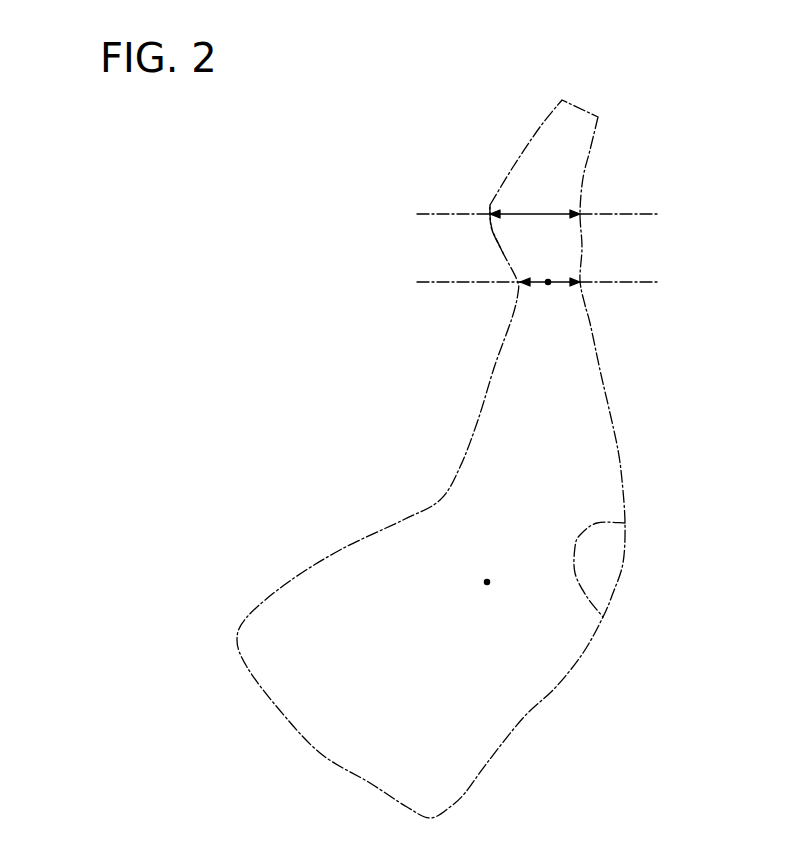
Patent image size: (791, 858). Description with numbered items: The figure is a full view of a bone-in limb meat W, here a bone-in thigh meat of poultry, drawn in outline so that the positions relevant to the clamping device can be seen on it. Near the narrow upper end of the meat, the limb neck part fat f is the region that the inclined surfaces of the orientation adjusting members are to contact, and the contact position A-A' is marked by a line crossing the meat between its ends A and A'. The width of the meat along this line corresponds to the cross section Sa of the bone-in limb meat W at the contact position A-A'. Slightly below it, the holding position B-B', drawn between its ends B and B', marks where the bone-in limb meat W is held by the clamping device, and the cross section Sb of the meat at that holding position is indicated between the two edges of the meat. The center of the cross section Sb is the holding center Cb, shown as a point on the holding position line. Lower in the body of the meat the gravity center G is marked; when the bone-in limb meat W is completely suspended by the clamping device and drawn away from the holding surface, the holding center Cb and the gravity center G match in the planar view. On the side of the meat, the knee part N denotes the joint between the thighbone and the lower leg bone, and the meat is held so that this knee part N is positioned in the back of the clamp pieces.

The bone-in limb meat W is at (402, 520).
The flange / notch portion f is at (490, 202).
The contact position A-A' A is at (442, 214).
The contact position A- A' is at (634, 214).
The holding position B-B' B is at (457, 282).
The holding position B- B' is at (634, 282).
The cross section at the contact position Sa is at (535, 203).
The cross section at the holding position Sb is at (560, 280).
The holding center Cb is at (549, 285).
The knee part N is at (615, 562).
The gravity center G is at (487, 582).